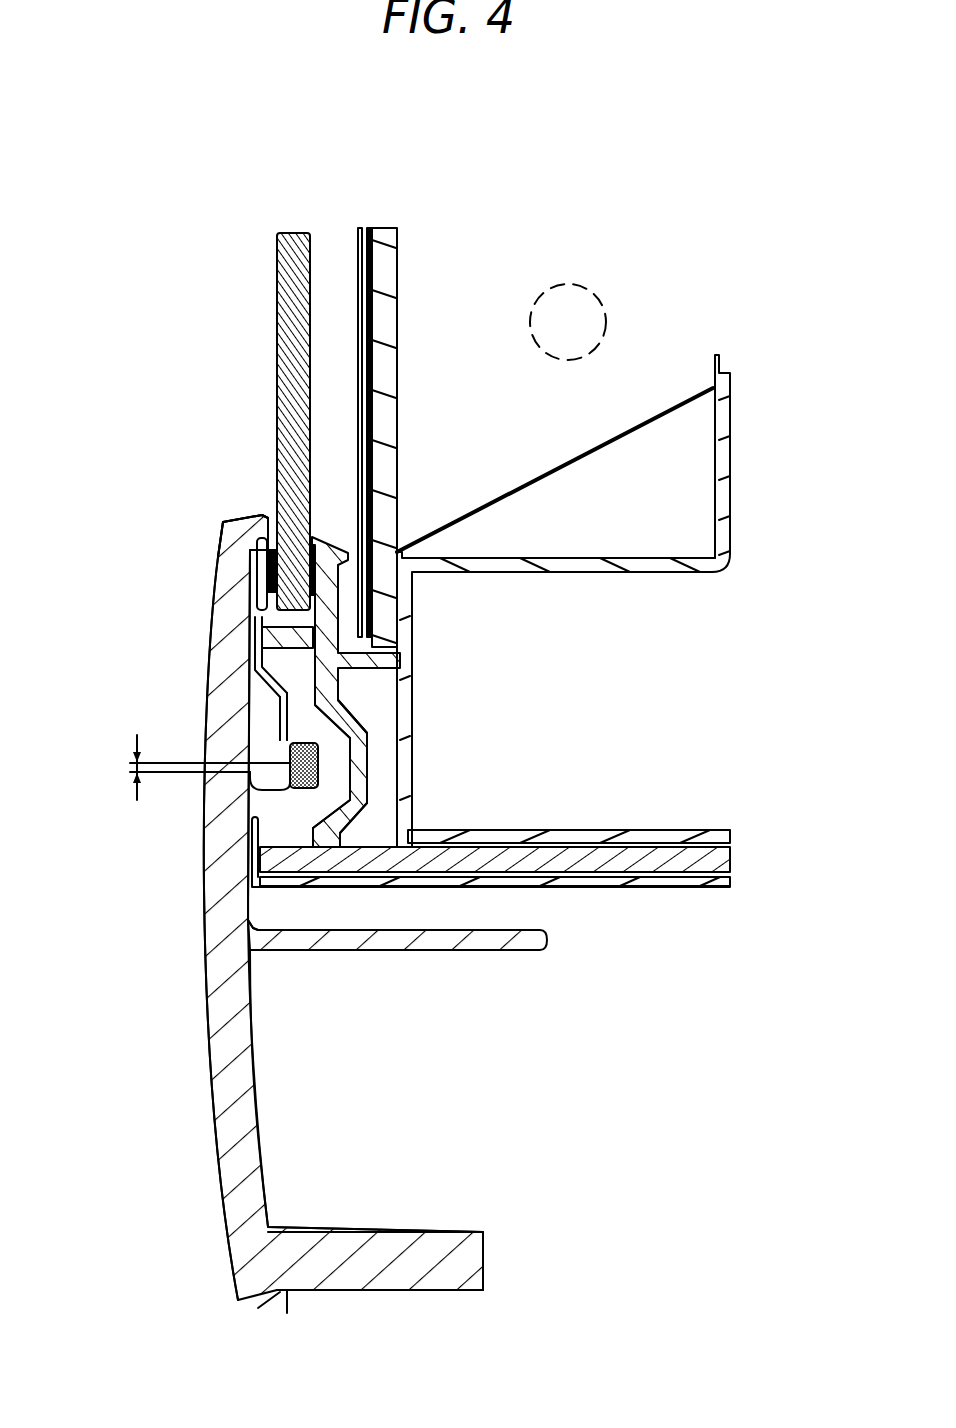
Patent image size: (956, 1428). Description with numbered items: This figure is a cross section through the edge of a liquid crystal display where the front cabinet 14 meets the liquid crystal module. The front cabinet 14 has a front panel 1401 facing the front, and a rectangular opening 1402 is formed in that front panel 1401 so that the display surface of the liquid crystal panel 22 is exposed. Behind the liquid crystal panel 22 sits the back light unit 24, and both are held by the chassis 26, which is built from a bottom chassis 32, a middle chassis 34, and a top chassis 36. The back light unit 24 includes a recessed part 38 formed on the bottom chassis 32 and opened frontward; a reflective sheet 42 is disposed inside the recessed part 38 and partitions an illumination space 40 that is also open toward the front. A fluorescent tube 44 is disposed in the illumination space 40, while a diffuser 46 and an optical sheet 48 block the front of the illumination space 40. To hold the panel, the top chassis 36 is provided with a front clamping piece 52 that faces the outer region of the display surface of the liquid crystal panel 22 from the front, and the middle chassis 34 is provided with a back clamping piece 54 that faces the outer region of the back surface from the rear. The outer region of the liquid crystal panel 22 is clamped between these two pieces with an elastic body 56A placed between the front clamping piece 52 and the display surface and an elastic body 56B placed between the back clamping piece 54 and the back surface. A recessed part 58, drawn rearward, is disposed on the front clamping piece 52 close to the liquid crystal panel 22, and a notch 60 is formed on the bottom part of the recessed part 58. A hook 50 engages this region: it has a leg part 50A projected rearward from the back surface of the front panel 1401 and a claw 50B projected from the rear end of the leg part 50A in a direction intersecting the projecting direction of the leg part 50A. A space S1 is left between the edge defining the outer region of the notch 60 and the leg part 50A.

The front cabinet 14 is at (190, 1060).
The front panel 1401 is at (213, 1183).
The rectangular opening 1402 is at (267, 516).
The liquid crystal panel 22 is at (277, 275).
The back light unit 24 is at (332, 243).
The chassis 26 is at (631, 902).
The bottom chassis 32 is at (722, 830).
The middle chassis 34 is at (682, 875).
The top chassis 36 is at (252, 862).
The recessed part 38 is at (718, 487).
The illumination space 40 is at (483, 437).
The reflective sheet 42 is at (662, 410).
The fluorescent tube 44 is at (600, 292).
The diffuser 46 is at (397, 268).
The optical sheet 48 is at (353, 243).
The hook 50 is at (338, 773).
The leg part 50A is at (290, 790).
The claw 50B is at (312, 742).
The front clamping piece 52 is at (256, 620).
The back clamping piece 54 is at (395, 660).
The elastic body 56A is at (268, 577).
The elastic body 56B is at (343, 573).
The recessed part 58 is at (300, 722).
The notch 60 is at (288, 770).
The space S1 is at (192, 755).